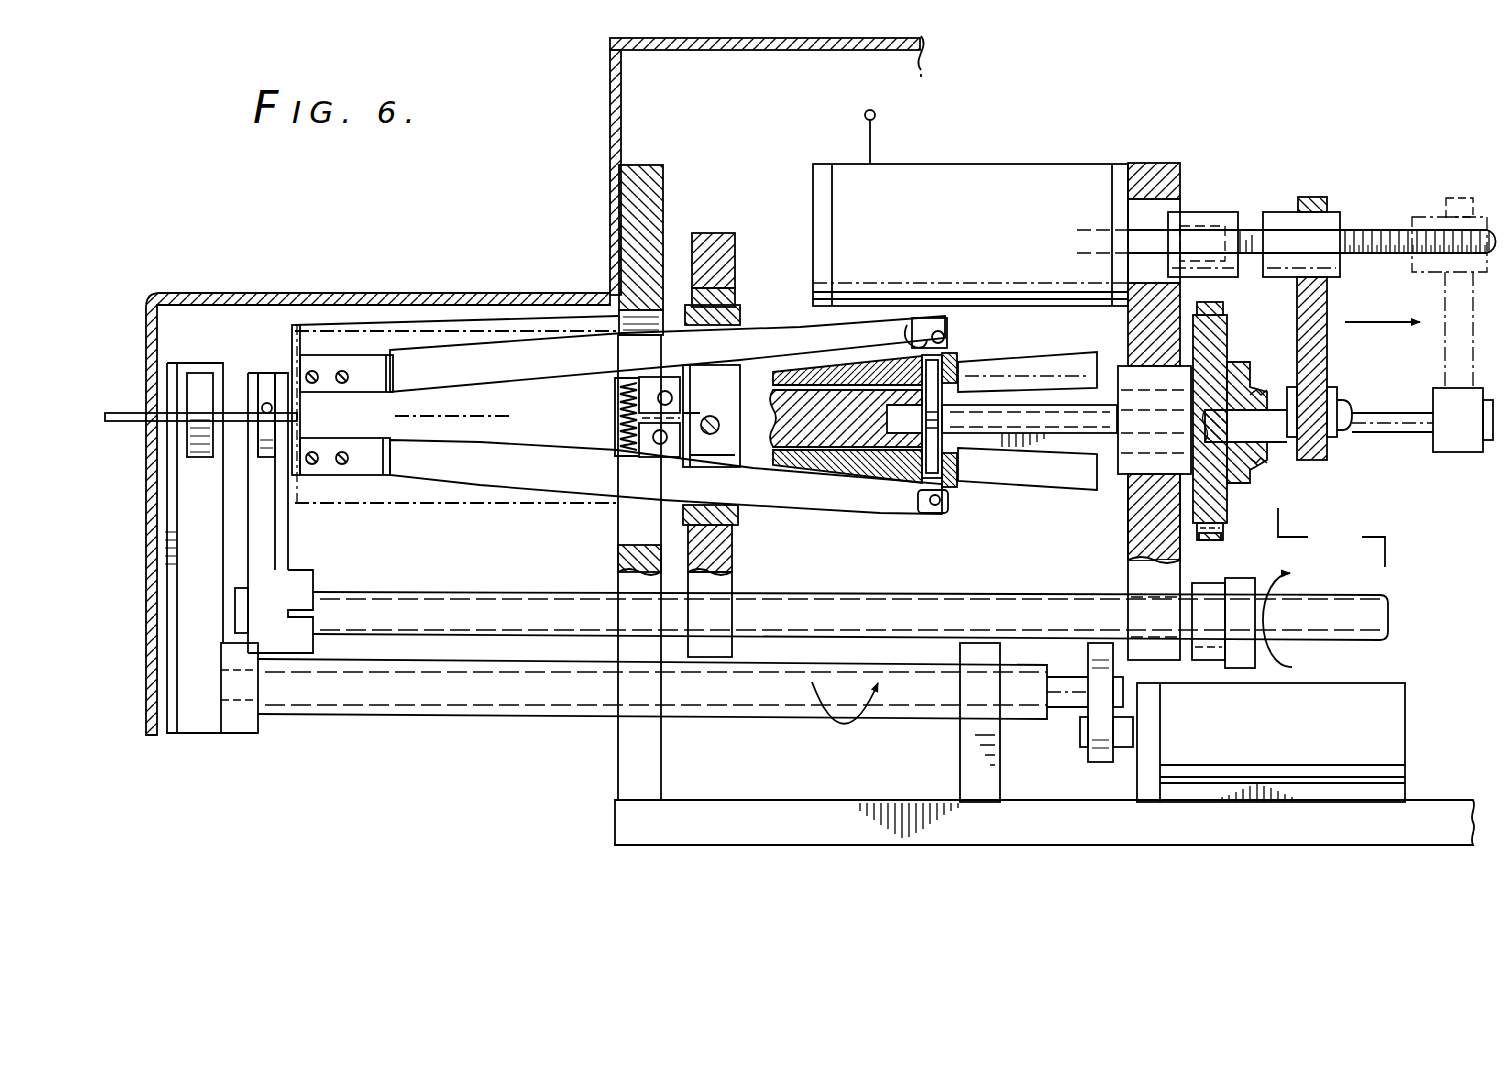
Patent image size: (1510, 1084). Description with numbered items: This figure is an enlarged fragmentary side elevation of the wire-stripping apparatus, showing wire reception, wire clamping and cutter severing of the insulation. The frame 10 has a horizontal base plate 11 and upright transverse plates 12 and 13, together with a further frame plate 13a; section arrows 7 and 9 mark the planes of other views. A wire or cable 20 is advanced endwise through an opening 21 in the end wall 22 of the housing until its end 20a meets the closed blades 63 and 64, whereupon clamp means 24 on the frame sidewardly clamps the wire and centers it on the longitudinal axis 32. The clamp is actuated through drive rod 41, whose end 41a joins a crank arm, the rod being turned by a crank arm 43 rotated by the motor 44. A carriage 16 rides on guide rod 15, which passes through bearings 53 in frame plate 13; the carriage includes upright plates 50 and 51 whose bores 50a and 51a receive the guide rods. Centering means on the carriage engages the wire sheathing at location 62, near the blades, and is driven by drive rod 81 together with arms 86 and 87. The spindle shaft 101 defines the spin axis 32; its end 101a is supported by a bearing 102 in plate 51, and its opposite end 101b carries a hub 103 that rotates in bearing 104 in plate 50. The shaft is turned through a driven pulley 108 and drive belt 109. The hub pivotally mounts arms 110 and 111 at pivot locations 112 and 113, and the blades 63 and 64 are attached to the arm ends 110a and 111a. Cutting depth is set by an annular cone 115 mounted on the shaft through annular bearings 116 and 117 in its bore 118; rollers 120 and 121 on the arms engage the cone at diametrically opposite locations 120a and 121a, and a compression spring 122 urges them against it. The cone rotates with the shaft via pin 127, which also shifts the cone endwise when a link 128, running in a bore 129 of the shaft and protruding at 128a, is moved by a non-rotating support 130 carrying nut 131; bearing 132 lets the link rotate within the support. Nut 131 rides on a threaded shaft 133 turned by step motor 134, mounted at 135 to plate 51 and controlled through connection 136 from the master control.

The section line 7- 7 is at (160, 345).
The section line 9- 9 is at (247, 307).
The frame 10 is at (608, 857).
The horizontal base plate 11 is at (782, 827).
The upright transverse plate 12 is at (1280, 150).
The upright transverse plate 13 is at (622, 772).
The frame plate 13a is at (960, 768).
The guide rod 15 is at (850, 616).
The carriage 16 is at (680, 268).
The wire or cable 20 is at (122, 411).
The wire end 20a is at (298, 406).
The opening 21 is at (152, 436).
The end wall 22 is at (146, 593).
The clamp means 24 is at (195, 465).
The longitudinal axis 32 is at (480, 420).
The drive rod 41 is at (1060, 697).
The rod end 41a is at (400, 693).
The crank arm 43 is at (1100, 763).
The motor or gear motor 44 is at (1271, 742).
The upright carriage plate 50 is at (707, 235).
The bore 50a is at (733, 600).
The upright carriage plate 51 is at (1132, 526).
The bore 51a is at (1135, 605).
The bearings 53 is at (623, 575).
The wire engaging location 62 is at (262, 350).
The blade or cutter 63 is at (300, 402).
The blade or cutter 64 is at (322, 477).
The drive rod 81 is at (462, 627).
The arm 86 is at (1240, 660).
The arm 87 is at (1215, 585).
The horizontal shaft 101 is at (846, 418).
The shaft end 101a is at (1095, 457).
The shaft end 101b is at (752, 450).
The bearing 102 is at (1147, 367).
The hub 103 is at (711, 416).
The bearing 104 is at (738, 307).
The driven pulley 108 is at (1229, 505).
The drive belt 109 is at (1213, 300).
The arm 110 is at (470, 345).
The arm end 110a is at (330, 350).
The arm 111 is at (512, 475).
The arm end 111a is at (367, 467).
The pivot location 112 is at (664, 388).
The pivot location 113 is at (656, 445).
The annular cone 115 is at (875, 470).
The annular bearing 116 is at (790, 372).
The annular bearing 117 is at (962, 368).
The cone bore 118 is at (837, 395).
The roller 120 is at (953, 335).
The engagement location 120a is at (910, 330).
The roller 121 is at (943, 512).
The engagement location 121a is at (920, 505).
The compression spring 122 is at (613, 413).
The pin 127 is at (985, 386).
The link 128 is at (1029, 426).
The link protrusion 128a is at (1278, 425).
The bore 129 is at (1210, 423).
The support 130 is at (1320, 348).
The nut 131 is at (1340, 212).
The bearing 132 is at (1343, 440).
The threaded shaft 133 is at (1383, 230).
The step or gear motor 134 is at (967, 175).
The motor mounting 135 is at (1128, 163).
The connection 136 is at (866, 140).